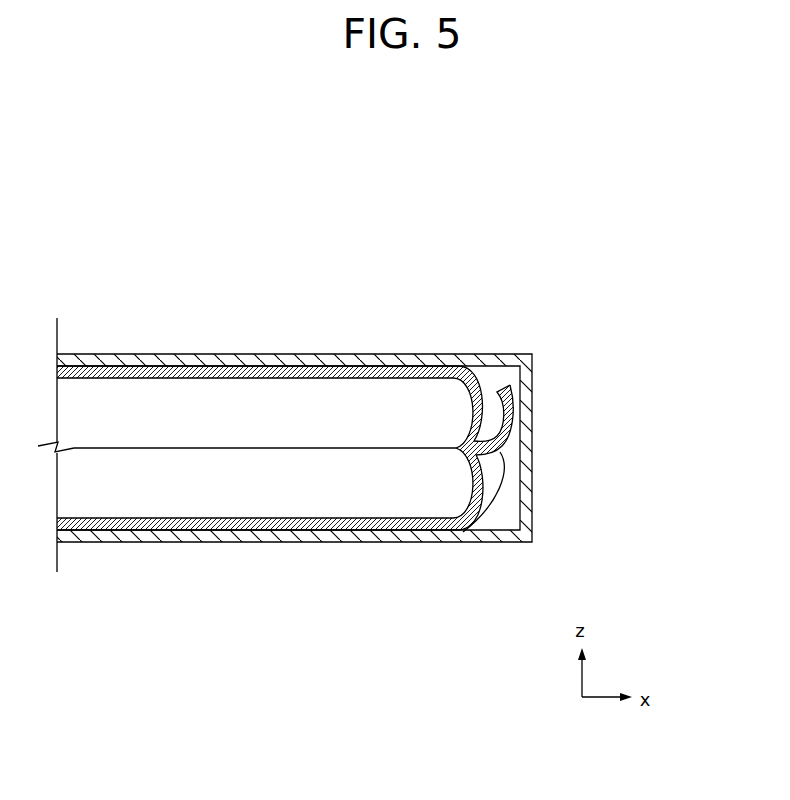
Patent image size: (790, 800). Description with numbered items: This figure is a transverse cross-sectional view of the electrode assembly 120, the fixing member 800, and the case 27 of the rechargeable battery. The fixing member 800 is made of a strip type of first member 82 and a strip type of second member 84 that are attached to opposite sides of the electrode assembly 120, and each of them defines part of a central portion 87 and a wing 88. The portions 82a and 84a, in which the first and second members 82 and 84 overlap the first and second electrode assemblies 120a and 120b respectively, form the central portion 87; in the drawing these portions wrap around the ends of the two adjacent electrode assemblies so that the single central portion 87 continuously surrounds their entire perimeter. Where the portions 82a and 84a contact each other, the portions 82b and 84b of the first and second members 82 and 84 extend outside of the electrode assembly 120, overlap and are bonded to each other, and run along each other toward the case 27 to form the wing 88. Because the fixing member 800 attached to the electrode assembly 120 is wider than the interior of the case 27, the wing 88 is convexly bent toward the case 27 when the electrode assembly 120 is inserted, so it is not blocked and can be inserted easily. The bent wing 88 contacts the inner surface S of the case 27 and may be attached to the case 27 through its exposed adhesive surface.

The case 27 is at (288, 360).
The fixing member 800 is at (384, 448).
The second member 84 is at (283, 356).
The portion of second member overlapping electrode assembly 84a is at (395, 372).
The portion of second member extending outside electrode assembly 84b is at (500, 408).
The first member 82 is at (285, 508).
The portion of first member overlapping electrode assembly 82a is at (397, 524).
The portion of first member extending outside electrode assembly 82b is at (477, 490).
The central portion 87 is at (635, 528).
The wing 88 is at (635, 430).
The electrode assembly 120 is at (264, 505).
The first electrode assembly 120a is at (257, 494).
The second electrode assembly 120b is at (201, 424).
The inner surface S is at (517, 483).